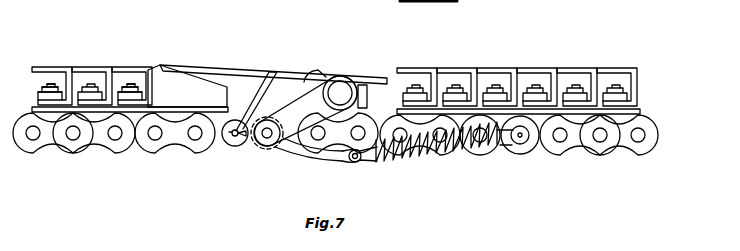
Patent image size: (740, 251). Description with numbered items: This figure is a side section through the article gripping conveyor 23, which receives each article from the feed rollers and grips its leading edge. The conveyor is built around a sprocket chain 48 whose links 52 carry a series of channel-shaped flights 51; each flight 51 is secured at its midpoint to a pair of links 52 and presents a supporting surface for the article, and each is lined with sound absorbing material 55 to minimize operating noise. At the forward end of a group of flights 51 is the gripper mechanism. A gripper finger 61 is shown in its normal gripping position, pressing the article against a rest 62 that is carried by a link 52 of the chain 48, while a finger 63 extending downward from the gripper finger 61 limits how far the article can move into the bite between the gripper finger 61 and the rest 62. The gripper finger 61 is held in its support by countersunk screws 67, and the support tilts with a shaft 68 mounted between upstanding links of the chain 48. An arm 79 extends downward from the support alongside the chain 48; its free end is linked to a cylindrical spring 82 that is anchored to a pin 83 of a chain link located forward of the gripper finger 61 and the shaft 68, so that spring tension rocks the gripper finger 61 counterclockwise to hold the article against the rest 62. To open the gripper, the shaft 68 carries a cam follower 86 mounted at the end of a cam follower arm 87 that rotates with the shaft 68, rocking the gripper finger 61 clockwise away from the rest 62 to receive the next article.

The article gripping conveyor 23 is at (583, 60).
The sprocket chain 48 is at (613, 147).
The flight 51 is at (90, 67).
The link 52 is at (178, 146).
The sound absorbing material 55 is at (53, 67).
The gripper finger 61 is at (234, 70).
The rest 62 is at (181, 83).
The finger 63 is at (270, 77).
The countersunk screw 67 is at (521, 241).
The shaft 68 is at (343, 92).
The arm 79 is at (315, 156).
The cylindrical spring 82 is at (408, 160).
The pin 83 is at (522, 137).
The cam follower 86 is at (266, 146).
The cam follower arm 87 is at (318, 119).